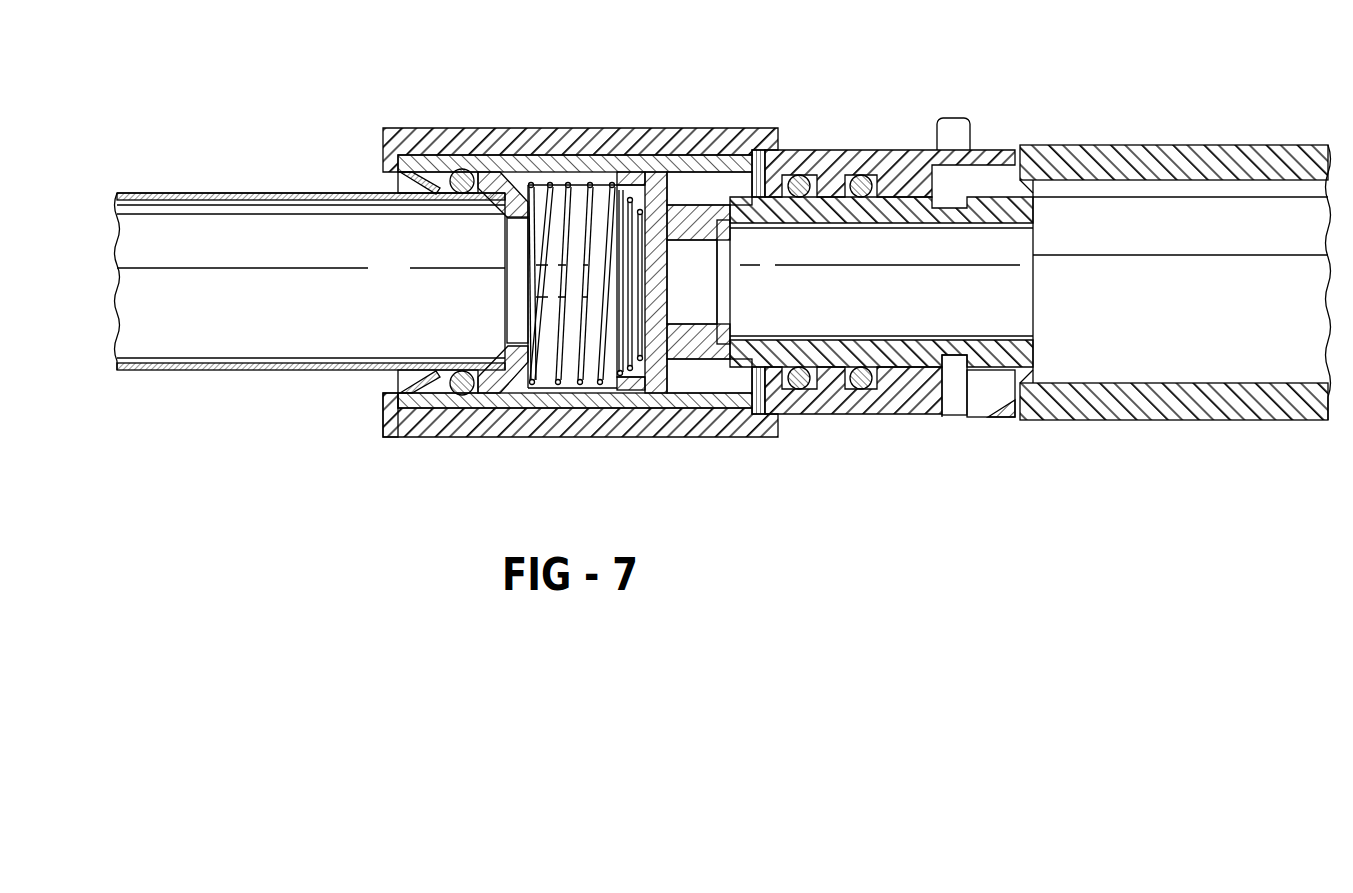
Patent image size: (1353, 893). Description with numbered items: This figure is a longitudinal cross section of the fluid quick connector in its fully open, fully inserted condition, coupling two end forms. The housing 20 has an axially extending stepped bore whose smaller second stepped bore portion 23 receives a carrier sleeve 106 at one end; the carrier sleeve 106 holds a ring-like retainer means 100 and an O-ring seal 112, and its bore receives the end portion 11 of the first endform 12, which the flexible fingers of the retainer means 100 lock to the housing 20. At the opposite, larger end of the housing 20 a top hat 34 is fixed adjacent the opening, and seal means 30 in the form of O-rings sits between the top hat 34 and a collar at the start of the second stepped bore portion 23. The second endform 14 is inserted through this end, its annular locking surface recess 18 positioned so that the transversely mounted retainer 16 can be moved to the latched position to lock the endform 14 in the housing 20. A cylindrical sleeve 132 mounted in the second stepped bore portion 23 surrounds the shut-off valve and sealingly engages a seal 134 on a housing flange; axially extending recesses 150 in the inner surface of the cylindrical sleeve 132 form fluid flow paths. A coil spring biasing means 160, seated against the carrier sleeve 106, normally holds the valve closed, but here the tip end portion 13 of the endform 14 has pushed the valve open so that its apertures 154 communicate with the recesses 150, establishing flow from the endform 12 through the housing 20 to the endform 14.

The end portion of the endform 11 is at (284, 364).
The endform 12 is at (157, 191).
The tip end portion of the endform 13 is at (781, 414).
The endform 14 is at (908, 395).
The retainer 16 is at (950, 131).
The annular locking surface recess 18 is at (956, 391).
The housing 20 is at (648, 124).
The second stepped bore portion 23 is at (715, 410).
The seal means 30 is at (857, 172).
The top hat 34 is at (887, 394).
The retainer means 100 is at (401, 190).
The sleeve 106 is at (379, 421).
The seal 112 is at (459, 394).
The cylindrical sleeve 132 is at (605, 150).
The seal 134 is at (753, 152).
The recesses 150 is at (573, 298).
The apertures 154 is at (697, 196).
The biasing means 160 is at (580, 183).